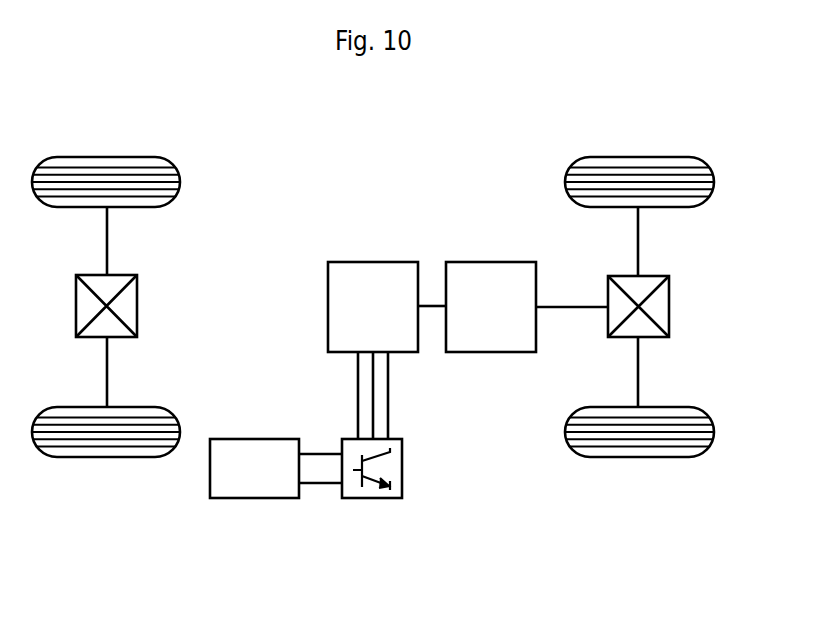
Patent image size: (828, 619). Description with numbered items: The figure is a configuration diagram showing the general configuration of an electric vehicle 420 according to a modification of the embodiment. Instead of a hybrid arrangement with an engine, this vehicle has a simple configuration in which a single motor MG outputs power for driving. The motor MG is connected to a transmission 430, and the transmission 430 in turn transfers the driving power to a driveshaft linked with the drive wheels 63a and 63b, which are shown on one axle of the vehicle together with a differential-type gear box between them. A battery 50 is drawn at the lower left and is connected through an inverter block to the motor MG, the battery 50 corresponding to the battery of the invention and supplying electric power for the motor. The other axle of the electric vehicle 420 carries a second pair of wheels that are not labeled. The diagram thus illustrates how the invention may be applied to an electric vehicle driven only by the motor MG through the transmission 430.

The electric vehicle 420 is at (446, 115).
The drive wheel 63a is at (638, 157).
The drive wheel 63b is at (638, 457).
The motor MG is at (373, 262).
The transmission 430 is at (492, 262).
The battery 50 is at (253, 439).